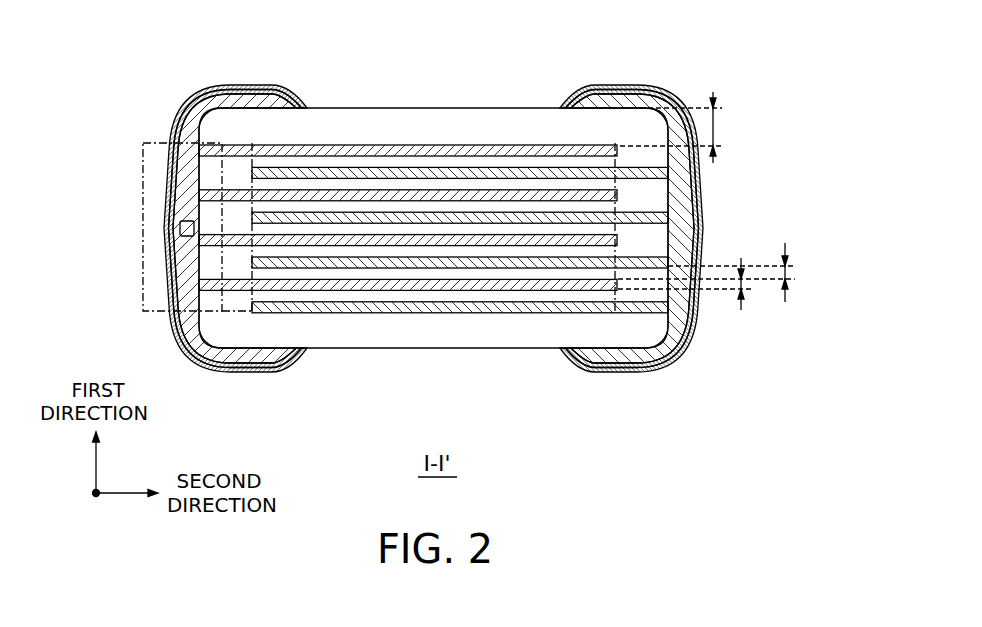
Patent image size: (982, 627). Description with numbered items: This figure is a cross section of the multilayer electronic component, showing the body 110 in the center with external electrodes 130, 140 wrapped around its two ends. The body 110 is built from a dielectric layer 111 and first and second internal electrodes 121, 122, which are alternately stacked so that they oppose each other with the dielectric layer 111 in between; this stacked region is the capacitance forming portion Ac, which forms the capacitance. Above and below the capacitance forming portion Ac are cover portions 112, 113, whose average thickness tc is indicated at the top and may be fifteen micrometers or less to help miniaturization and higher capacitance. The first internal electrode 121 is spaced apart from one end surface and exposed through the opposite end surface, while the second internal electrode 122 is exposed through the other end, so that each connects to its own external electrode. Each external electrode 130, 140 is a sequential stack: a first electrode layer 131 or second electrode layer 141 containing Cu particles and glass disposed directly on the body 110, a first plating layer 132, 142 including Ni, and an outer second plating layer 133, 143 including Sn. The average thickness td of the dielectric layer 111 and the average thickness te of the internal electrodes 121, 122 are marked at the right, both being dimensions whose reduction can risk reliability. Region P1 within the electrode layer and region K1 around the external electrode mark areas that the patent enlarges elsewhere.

The body 110 is at (393, 108).
The dielectric layer 111 is at (332, 185).
The cover portion 112 is at (447, 120).
The cover portion 113 is at (448, 327).
The first internal electrode 121 is at (497, 150).
The second internal electrode 122 is at (547, 172).
The external electrode 130 is at (164, 228).
The first electrode layer 131 is at (183, 170).
The first plating layer 132 is at (170, 198).
The second plating layer 133 is at (82, 152).
The external electrode 140 is at (705, 228).
The second electrode layer 141 is at (683, 188).
The first plating layer 142 is at (700, 210).
The second plating layer 143 is at (790, 152).
The region P1 is at (183, 237).
The region K1 is at (142, 287).
The capacitance forming portion Ac is at (517, 315).
The average thickness of the cover portions tc is at (679, 127).
The average thickness of the dielectric layer td is at (716, 272).
The average thickness of the internal electrodes te is at (694, 284).